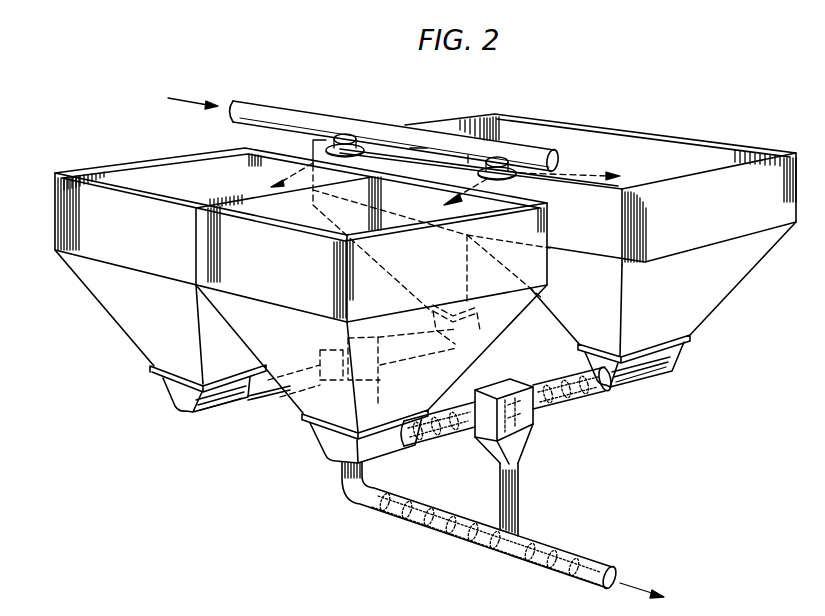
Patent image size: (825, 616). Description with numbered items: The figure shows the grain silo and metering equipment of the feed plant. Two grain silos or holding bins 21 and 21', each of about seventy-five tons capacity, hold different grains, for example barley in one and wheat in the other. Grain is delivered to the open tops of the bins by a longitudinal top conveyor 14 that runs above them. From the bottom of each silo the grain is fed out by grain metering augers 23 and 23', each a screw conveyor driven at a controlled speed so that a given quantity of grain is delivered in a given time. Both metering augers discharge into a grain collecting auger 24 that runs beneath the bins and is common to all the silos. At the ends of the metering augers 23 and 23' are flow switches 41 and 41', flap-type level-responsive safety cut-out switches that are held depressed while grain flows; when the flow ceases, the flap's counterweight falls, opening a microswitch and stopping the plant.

The longitudinal top conveyor 14 is at (283, 108).
The grain silo 21 is at (301, 313).
The grain silo 21' is at (568, 250).
The grain metering auger 23 is at (374, 394).
The grain metering auger 23' is at (598, 395).
The grain collecting auger 24 is at (498, 555).
The flow switch 41 is at (504, 396).
The flow switch 41' is at (534, 478).